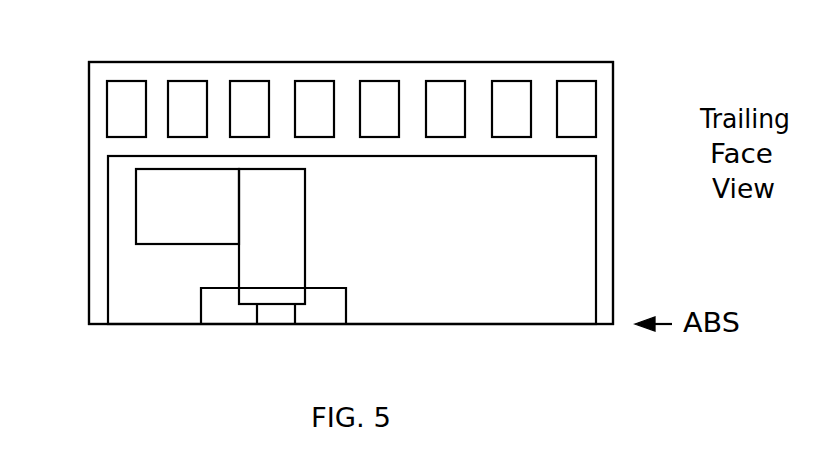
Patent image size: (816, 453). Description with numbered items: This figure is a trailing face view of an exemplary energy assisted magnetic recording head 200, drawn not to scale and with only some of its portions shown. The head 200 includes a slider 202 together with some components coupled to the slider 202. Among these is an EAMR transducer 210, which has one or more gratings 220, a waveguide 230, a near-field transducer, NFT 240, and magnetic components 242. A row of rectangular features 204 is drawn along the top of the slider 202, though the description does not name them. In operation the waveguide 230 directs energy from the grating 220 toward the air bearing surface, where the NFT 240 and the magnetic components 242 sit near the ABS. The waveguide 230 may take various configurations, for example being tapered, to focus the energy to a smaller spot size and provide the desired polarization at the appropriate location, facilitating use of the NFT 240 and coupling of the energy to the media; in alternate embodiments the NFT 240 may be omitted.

The EAMR head 200 is at (376, 36).
The slider 202 is at (613, 267).
The bond pads 204 is at (623, 108).
The EAMR transducer 210 is at (463, 324).
The grating 220 is at (135, 207).
The waveguide 230 is at (239, 267).
The NFT 240 is at (268, 324).
The magnetic components 242 is at (346, 311).